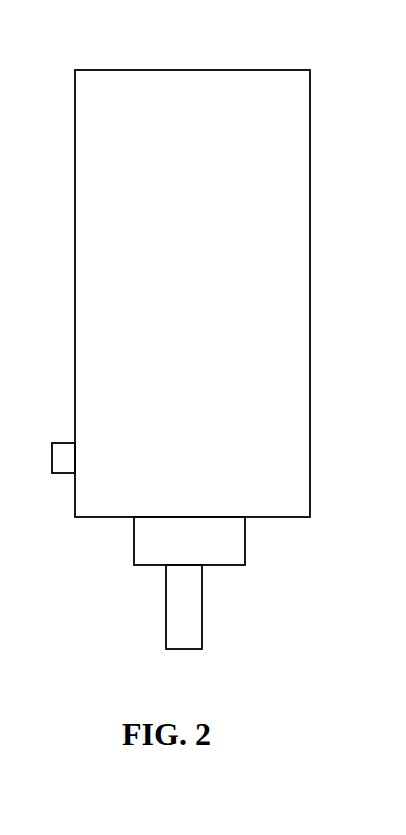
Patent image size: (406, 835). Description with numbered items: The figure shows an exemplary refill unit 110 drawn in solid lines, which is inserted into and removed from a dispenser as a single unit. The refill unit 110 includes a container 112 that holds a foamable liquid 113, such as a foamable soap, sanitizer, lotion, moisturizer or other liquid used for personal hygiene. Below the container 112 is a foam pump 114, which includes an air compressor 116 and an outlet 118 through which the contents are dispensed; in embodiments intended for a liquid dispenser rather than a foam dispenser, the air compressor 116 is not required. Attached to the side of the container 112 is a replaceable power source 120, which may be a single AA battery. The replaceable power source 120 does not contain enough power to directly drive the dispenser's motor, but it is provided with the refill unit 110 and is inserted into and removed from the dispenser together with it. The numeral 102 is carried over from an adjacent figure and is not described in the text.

The system 102 is at (0, 4).
The refill unit 110 is at (204, 51).
The container 112 is at (310, 337).
The foamable liquid 113 is at (262, 248).
The foam pump 114 is at (262, 600).
The air compressor 116 is at (245, 537).
The outlet 118 is at (202, 626).
The replaceable power source 120 is at (64, 442).